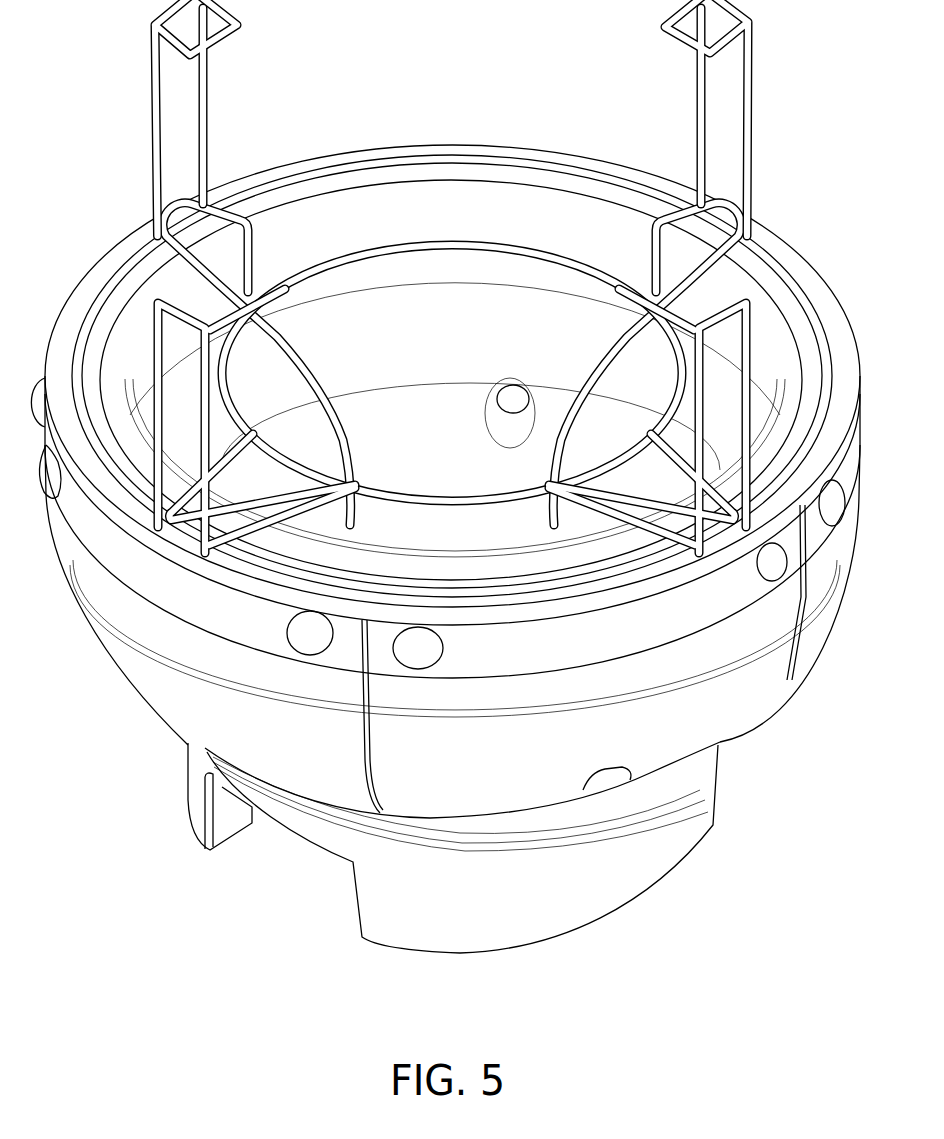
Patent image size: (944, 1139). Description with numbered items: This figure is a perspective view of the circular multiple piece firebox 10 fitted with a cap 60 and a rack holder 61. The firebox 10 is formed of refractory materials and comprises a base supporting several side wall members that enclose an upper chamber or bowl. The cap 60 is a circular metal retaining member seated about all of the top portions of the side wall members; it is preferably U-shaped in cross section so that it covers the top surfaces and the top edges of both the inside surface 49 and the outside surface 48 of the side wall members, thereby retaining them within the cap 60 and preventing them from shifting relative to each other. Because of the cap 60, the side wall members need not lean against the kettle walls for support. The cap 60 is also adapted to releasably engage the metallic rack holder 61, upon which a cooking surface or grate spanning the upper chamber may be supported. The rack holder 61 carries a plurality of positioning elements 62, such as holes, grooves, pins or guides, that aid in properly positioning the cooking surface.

The multiple piece firebox 10 is at (259, 880).
The outside surface 48 is at (742, 697).
The inside surface 49 is at (139, 435).
The cap 60 is at (813, 283).
The rack holder 61 is at (777, 263).
The positioning elements 62 is at (208, 90).